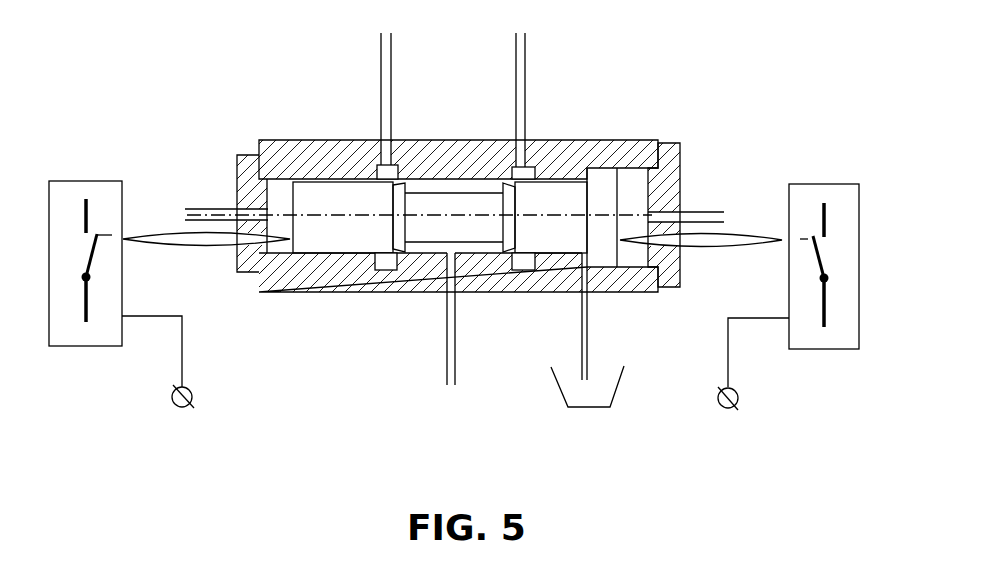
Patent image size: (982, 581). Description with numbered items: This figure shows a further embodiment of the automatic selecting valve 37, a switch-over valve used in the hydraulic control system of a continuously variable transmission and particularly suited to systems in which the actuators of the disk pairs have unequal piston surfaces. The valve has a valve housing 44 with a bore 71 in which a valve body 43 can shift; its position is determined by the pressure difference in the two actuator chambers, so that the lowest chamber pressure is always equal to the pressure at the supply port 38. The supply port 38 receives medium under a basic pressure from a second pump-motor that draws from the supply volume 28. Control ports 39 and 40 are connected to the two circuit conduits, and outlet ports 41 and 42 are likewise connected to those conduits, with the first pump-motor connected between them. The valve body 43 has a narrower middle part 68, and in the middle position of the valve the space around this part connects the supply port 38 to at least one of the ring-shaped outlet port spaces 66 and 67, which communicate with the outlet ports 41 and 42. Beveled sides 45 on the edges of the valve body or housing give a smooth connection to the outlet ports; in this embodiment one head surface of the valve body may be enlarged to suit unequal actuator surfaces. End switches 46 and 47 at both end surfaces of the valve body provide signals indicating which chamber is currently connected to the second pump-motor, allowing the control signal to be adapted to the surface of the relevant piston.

The selecting valve 37 is at (670, 63).
The valve housing 44 is at (283, 150).
The valve body 43 is at (317, 255).
The control port 40 is at (226, 198).
The control port 39 is at (689, 201).
The outlet port 42 is at (371, 128).
The outlet port 41 is at (536, 130).
The beveled sides 45 is at (512, 182).
The bore 71 is at (325, 240).
The narrower middle part 68 is at (452, 233).
The outlet port space 67 is at (379, 271).
The supply port 38 is at (472, 307).
The outlet port space 66 is at (587, 300).
The supply volume 28 is at (572, 387).
The end switch 46 is at (71, 202).
The end switch 47 is at (838, 208).